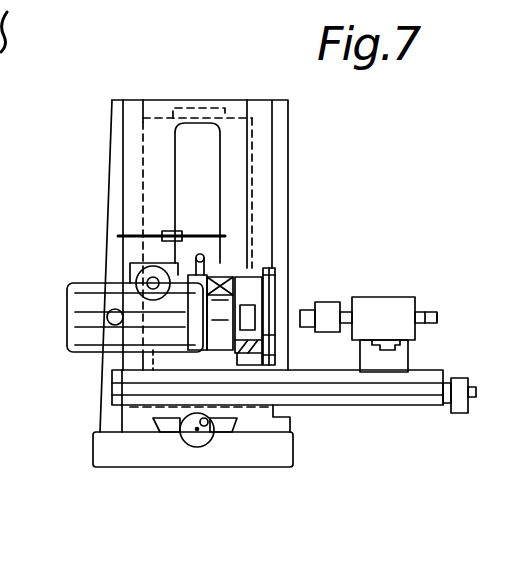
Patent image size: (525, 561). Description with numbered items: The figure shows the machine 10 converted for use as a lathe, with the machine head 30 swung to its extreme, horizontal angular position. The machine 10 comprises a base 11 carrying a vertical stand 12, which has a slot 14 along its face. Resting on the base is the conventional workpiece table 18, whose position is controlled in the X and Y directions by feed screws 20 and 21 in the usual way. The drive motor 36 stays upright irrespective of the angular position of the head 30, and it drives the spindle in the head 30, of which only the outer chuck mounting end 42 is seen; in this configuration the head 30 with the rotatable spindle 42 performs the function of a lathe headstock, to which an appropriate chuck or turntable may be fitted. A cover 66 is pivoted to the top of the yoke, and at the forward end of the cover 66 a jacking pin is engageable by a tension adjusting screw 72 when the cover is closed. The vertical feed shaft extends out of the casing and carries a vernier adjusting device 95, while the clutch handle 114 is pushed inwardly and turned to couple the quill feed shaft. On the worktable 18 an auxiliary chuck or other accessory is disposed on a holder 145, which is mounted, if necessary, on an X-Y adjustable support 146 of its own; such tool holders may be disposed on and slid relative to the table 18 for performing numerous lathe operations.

The machine 10 is at (313, 194).
The base 11 is at (258, 457).
The vertical stand 12 is at (110, 182).
The slot 14 is at (220, 187).
The workpiece table 18 is at (427, 372).
The feed screw 20 is at (190, 432).
The feed screw 21 is at (447, 410).
The machine head 30 is at (222, 280).
The drive motor 36 is at (207, 168).
The outer chuck mounting end of spindle 42 is at (280, 276).
The cover 66 is at (76, 306).
The tension adjusting screw 72 is at (112, 322).
The vernier adjusting device 95 is at (140, 274).
The handle 114 is at (133, 233).
The holder 145 is at (373, 303).
The X-Y adjustable support 146 is at (362, 357).